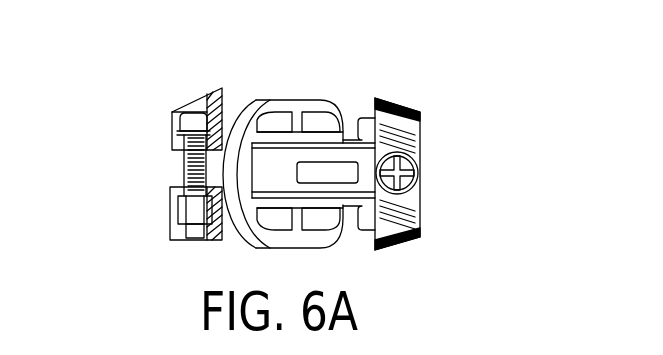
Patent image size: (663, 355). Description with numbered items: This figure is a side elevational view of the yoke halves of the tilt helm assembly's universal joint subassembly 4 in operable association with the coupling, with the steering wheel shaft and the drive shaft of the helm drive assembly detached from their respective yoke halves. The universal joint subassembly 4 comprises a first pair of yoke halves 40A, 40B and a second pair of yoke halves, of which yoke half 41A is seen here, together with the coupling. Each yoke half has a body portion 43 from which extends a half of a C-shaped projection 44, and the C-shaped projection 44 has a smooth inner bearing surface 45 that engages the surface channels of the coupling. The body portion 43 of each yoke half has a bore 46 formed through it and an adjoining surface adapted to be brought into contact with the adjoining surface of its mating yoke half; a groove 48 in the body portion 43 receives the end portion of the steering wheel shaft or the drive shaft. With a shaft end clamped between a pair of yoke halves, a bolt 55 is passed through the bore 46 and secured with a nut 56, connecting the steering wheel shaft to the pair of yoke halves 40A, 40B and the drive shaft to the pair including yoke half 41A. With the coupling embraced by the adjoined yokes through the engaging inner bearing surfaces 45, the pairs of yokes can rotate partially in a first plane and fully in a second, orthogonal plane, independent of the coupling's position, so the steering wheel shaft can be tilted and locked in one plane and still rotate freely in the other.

The universal joint subassembly 4 is at (341, 69).
The yoke half 40A is at (218, 86).
The yoke half 40B is at (224, 254).
The yoke half 41A is at (424, 96).
The body portion 43 is at (178, 114).
The C-shaped projection 44 is at (281, 98).
The inner bearing surface 45 is at (259, 98).
The bore 46 is at (182, 150).
The groove 48 is at (166, 169).
The bolt 55 is at (178, 133).
The nut 56 is at (181, 226).